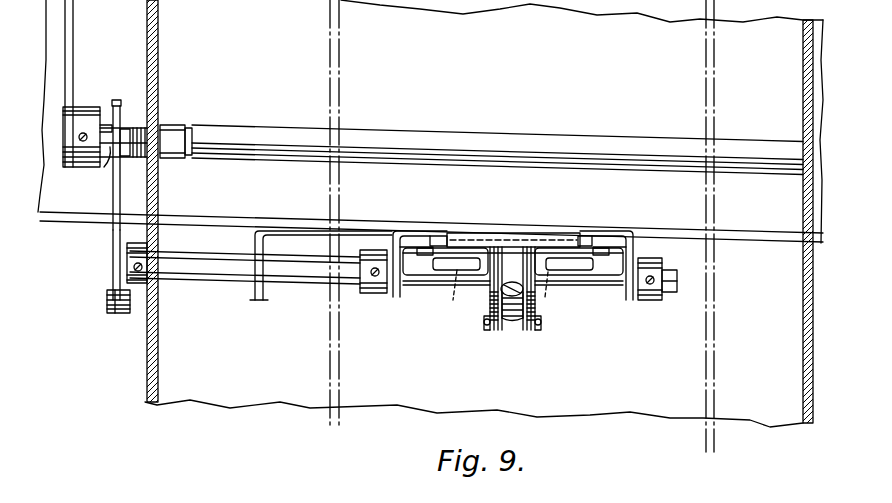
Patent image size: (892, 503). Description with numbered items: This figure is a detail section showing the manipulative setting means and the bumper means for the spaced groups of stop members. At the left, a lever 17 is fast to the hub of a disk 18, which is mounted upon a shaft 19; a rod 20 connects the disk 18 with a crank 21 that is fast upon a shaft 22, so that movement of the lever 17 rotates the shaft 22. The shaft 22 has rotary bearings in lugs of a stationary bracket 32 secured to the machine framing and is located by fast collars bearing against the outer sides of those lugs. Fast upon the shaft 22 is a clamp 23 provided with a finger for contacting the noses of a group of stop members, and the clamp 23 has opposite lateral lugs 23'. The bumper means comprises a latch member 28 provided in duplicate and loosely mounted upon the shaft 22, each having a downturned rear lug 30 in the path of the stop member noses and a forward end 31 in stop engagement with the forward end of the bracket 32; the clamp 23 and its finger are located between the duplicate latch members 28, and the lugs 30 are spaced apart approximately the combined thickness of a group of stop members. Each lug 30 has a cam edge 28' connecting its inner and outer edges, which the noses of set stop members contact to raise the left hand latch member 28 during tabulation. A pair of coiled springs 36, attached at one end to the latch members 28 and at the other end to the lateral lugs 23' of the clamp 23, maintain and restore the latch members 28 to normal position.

The lever 17 is at (67, 32).
The disk 18 is at (116, 100).
The shaft 19 is at (106, 166).
The rod 20 is at (118, 231).
The crank 21 is at (127, 267).
The shaft 22 is at (420, 278).
The clamp 23 is at (513, 326).
The lateral lugs 23' is at (521, 302).
The latch member 28 is at (513, 249).
The cam edge 28' is at (509, 303).
The downturned rear lug 30 is at (480, 263).
The forward end 31 is at (473, 250).
The stationary bracket 32 is at (510, 243).
The coiled springs 36 is at (489, 319).